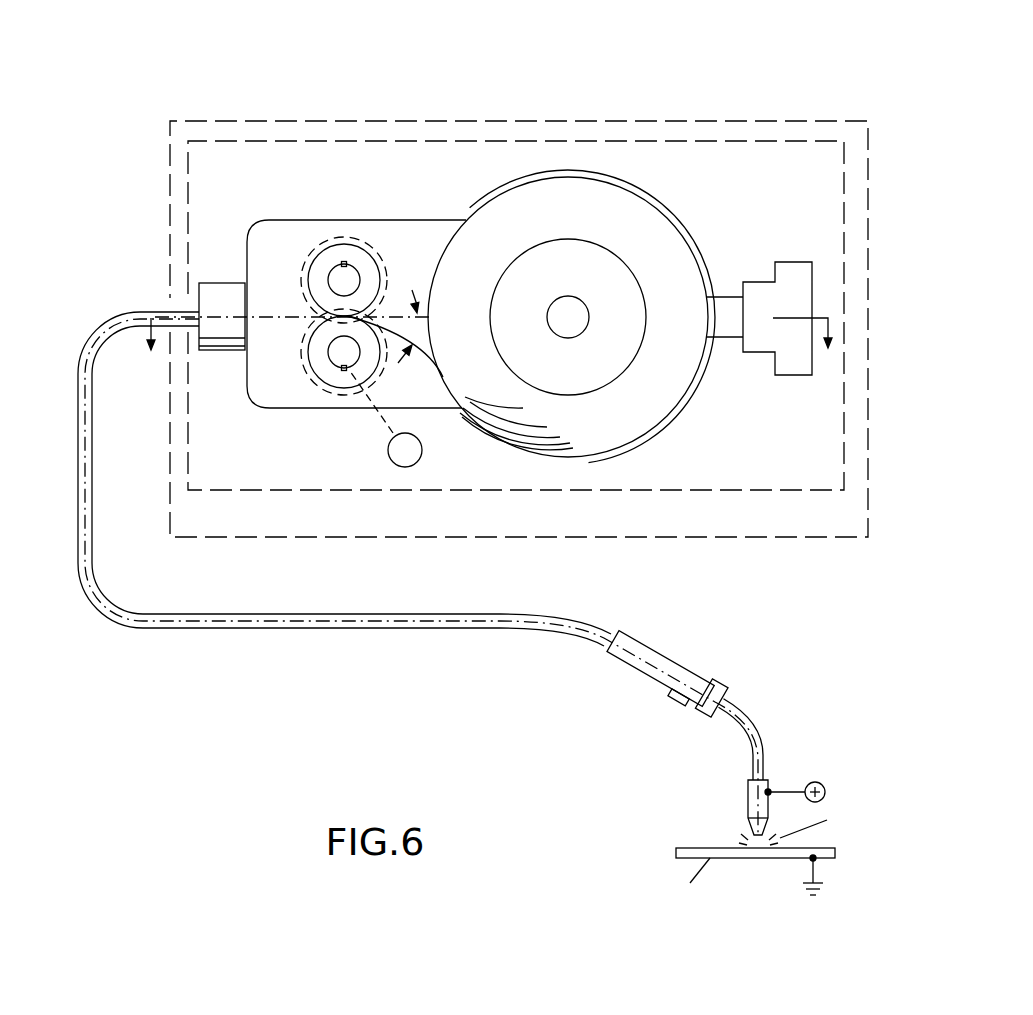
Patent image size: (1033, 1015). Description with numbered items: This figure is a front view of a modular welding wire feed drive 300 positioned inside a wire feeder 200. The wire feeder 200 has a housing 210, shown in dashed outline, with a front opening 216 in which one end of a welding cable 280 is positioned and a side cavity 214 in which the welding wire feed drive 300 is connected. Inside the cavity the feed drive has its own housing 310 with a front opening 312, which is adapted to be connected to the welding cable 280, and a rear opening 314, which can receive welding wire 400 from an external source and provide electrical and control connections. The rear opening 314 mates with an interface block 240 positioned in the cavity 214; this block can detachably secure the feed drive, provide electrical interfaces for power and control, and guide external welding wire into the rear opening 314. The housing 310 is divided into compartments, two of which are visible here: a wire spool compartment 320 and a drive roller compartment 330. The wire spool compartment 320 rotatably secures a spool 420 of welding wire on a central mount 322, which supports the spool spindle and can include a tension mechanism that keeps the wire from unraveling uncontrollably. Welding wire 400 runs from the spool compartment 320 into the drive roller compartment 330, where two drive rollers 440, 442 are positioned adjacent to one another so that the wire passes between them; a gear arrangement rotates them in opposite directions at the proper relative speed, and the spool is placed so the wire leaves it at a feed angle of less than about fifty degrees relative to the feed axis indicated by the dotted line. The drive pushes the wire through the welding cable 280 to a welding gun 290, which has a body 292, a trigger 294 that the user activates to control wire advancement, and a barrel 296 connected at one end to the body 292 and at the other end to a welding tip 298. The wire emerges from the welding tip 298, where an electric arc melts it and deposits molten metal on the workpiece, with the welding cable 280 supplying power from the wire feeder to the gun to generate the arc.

The wire feeder 200 is at (403, 84).
The housing 210 is at (612, 120).
The side cavity 214 is at (742, 172).
The front opening 216 is at (172, 298).
The interface block 240 is at (799, 260).
The welding cable 280 is at (380, 628).
The welding gun 290 is at (679, 723).
The body 292 is at (680, 663).
The trigger 294 is at (690, 703).
The barrel 296 is at (760, 728).
The welding tip 298 is at (752, 812).
The welding wire feed drive 300 is at (608, 312).
The housing 310 is at (670, 213).
The front opening 312 is at (220, 290).
The rear opening 314 is at (720, 315).
The wire spool compartment 320 is at (657, 436).
The central mount 322 is at (562, 305).
The drive roller compartment 330 is at (286, 400).
The welding wire 400 is at (282, 317).
The spool 420 is at (513, 212).
The drive roller 440 is at (346, 243).
The drive roller 442 is at (340, 380).